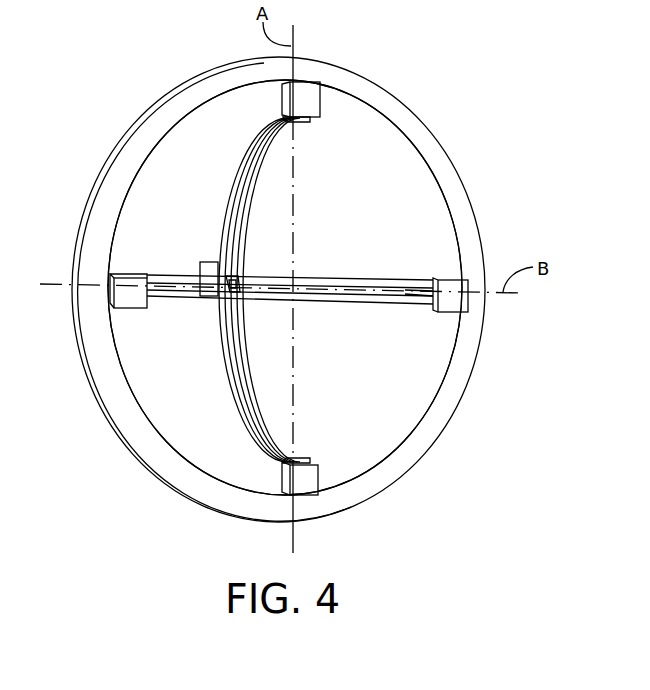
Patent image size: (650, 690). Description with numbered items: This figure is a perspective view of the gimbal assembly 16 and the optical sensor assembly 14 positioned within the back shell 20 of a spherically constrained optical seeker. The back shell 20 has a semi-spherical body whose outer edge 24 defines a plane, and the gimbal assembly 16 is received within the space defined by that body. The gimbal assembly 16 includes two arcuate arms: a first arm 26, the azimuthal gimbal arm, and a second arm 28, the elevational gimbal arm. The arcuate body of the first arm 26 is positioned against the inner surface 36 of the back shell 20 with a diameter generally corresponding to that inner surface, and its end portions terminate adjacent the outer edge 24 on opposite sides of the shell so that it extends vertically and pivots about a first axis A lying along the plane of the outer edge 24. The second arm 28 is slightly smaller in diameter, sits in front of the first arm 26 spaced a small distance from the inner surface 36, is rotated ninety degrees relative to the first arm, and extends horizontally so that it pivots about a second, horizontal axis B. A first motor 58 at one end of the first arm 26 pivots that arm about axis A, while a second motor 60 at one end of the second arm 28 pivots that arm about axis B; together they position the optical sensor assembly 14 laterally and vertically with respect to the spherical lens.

The optical sensor assembly 14 is at (229, 276).
The gimbal assembly 16 is at (230, 391).
The back shell 20 is at (402, 97).
The outer edge 24 is at (473, 352).
The first arm 26 is at (238, 158).
The second arm 28 is at (390, 272).
The inner surface 36 is at (378, 413).
The first motor 58 is at (303, 95).
The second motor 60 is at (120, 300).